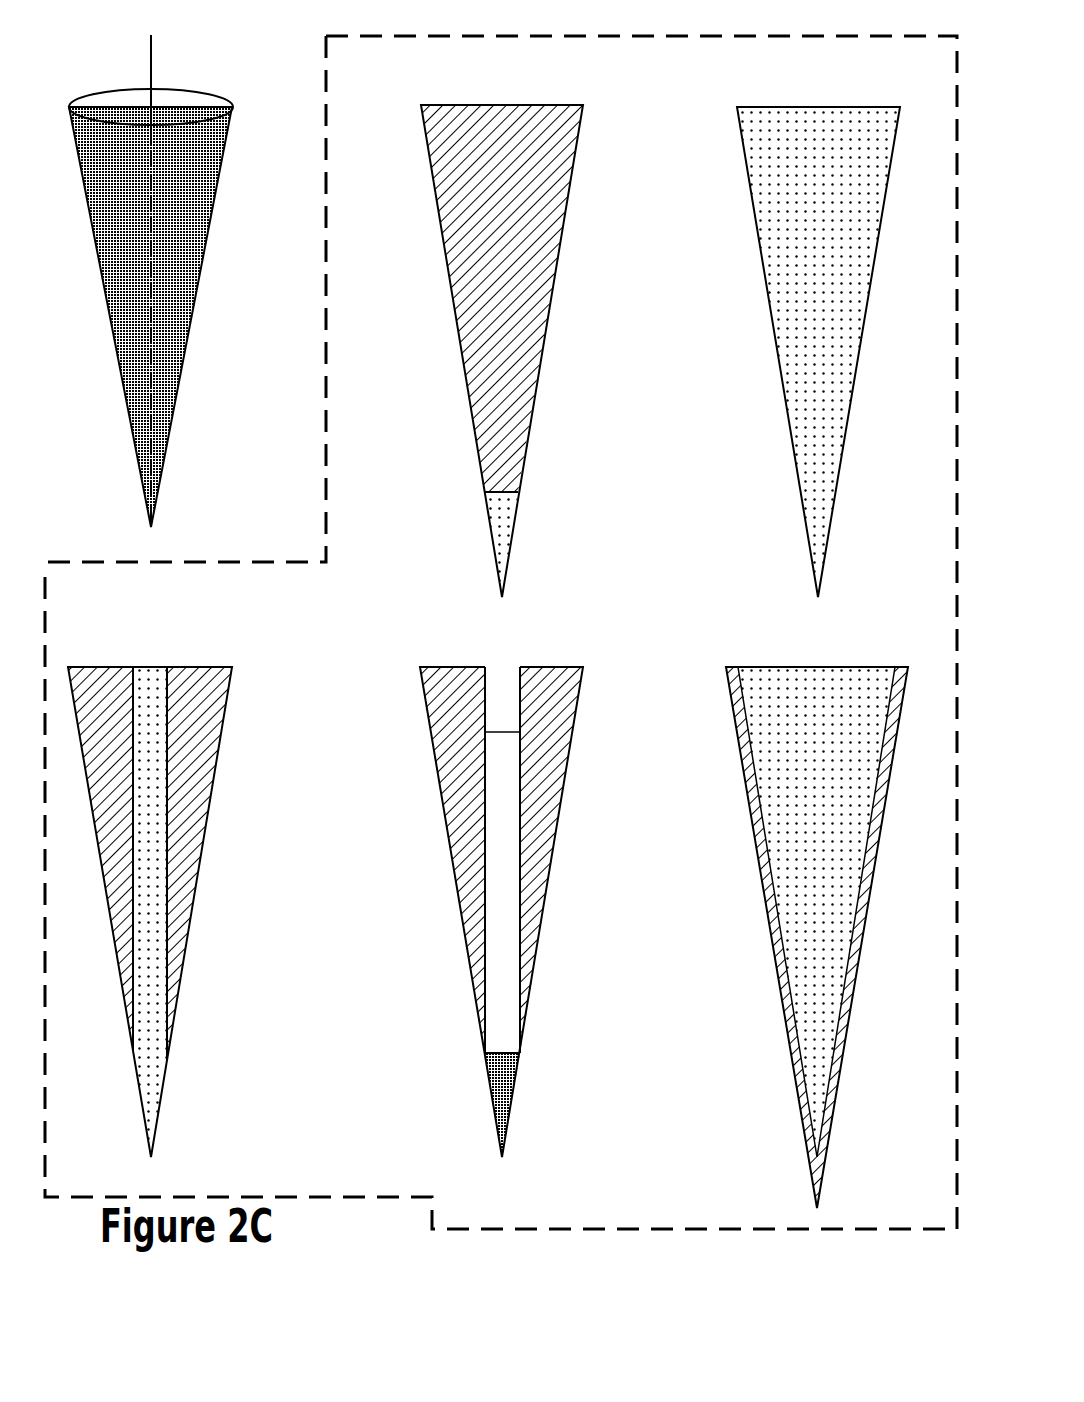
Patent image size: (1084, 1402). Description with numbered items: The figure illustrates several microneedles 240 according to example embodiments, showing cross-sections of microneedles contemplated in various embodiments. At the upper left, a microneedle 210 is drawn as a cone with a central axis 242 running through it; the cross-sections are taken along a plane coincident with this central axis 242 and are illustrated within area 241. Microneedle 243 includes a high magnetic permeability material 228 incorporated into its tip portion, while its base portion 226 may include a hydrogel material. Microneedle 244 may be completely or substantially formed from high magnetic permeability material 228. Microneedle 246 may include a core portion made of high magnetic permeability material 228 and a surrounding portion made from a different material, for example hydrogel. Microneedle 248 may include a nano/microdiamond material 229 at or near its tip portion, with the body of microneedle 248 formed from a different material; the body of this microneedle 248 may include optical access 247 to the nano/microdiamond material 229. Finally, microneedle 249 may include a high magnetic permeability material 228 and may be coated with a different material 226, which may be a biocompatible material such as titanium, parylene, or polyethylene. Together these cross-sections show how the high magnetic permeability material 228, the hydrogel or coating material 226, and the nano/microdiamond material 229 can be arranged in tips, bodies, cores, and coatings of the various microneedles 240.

The microneedle 210 is at (117, 350).
The base portion 226 is at (545, 362).
The high magnetic permeability material 228 is at (515, 543).
The nano/microdiamond material 229 is at (512, 1099).
The microneedles 240 is at (261, 38).
The area 241 is at (325, 340).
The central axis 242 is at (150, 67).
The microneedle 243 is at (562, 92).
The microneedle 244 is at (831, 90).
The microneedle 246 is at (189, 646).
The optical access 247 is at (502, 860).
The microneedle 248 is at (436, 650).
The microneedle 249 is at (796, 650).